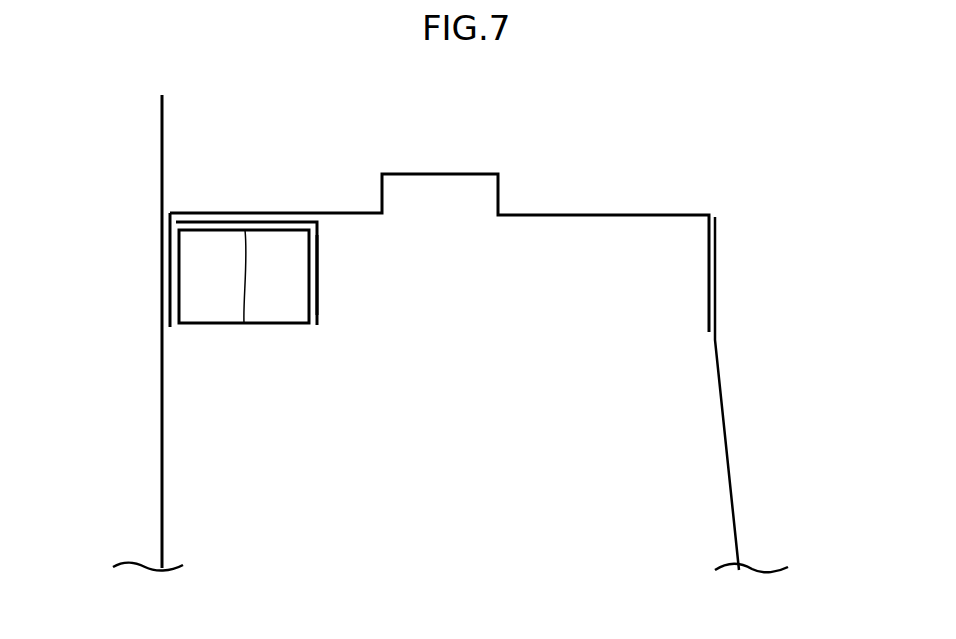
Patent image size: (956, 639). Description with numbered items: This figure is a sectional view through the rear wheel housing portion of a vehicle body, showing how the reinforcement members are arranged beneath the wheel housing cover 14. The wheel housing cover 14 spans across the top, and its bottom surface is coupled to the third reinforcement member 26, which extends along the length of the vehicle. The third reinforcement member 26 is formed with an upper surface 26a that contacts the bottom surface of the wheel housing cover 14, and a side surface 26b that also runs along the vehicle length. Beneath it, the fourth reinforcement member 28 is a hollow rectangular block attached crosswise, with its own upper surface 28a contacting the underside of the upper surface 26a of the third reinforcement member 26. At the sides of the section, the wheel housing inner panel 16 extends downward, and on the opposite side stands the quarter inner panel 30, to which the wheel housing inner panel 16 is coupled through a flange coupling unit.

The wheel housing cover 14 is at (604, 215).
The wheel housing inner panel 16 is at (728, 462).
The third reinforcement member 26 is at (318, 275).
The upper surface 26a is at (275, 221).
The side surface 26b is at (320, 301).
The fourth reinforcement member 28 is at (218, 325).
The upper surface 28a is at (244, 323).
The quarter inner panel 30 is at (158, 466).